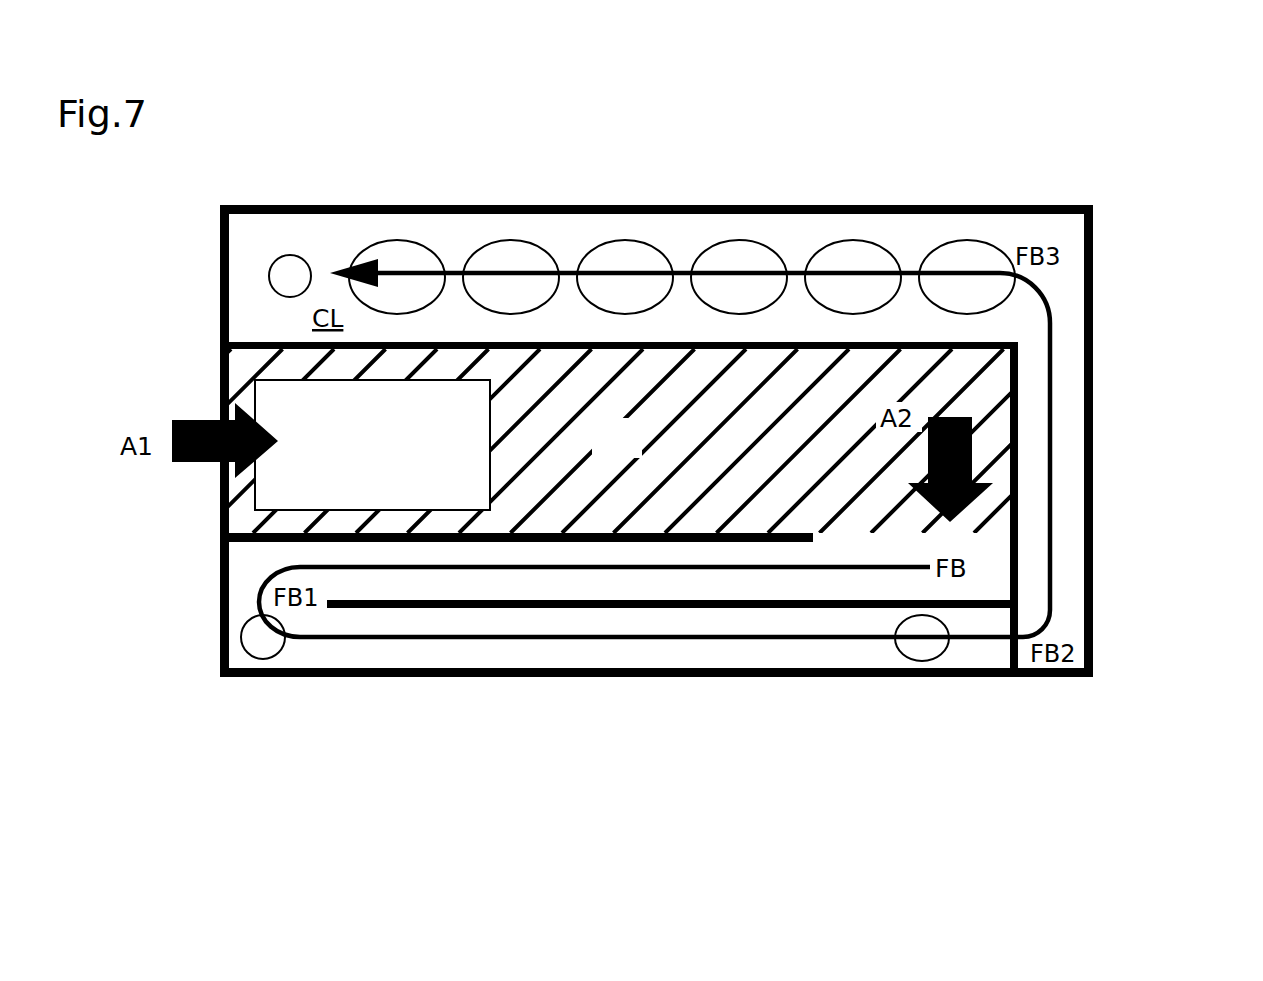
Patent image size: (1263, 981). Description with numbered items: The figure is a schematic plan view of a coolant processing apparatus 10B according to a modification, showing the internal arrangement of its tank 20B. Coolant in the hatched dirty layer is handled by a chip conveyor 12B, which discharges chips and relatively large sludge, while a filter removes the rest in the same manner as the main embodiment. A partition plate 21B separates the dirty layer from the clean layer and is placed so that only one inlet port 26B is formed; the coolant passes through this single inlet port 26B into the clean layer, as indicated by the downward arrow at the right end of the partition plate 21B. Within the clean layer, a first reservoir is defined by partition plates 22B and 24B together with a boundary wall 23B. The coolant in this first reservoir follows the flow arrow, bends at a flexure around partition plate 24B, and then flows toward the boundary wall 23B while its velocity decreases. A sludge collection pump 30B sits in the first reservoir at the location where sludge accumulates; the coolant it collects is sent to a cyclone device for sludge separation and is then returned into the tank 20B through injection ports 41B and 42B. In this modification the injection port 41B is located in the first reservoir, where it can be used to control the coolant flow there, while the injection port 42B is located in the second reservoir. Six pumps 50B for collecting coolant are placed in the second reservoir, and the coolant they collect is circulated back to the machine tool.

The coolant processing apparatus 10B is at (1158, 182).
The chip conveyor 12B is at (1017, 383).
The tank 20B is at (1094, 604).
The partition plate 21B is at (625, 341).
The partition plate 22B is at (260, 544).
The boundary wall 23B is at (1006, 662).
The partition plate 24B is at (548, 608).
The inlet port 26B is at (990, 537).
The sludge collection pump 30B is at (915, 661).
The injection port 41B is at (261, 660).
The injection port 42B is at (290, 255).
The pumps 50B is at (958, 240).